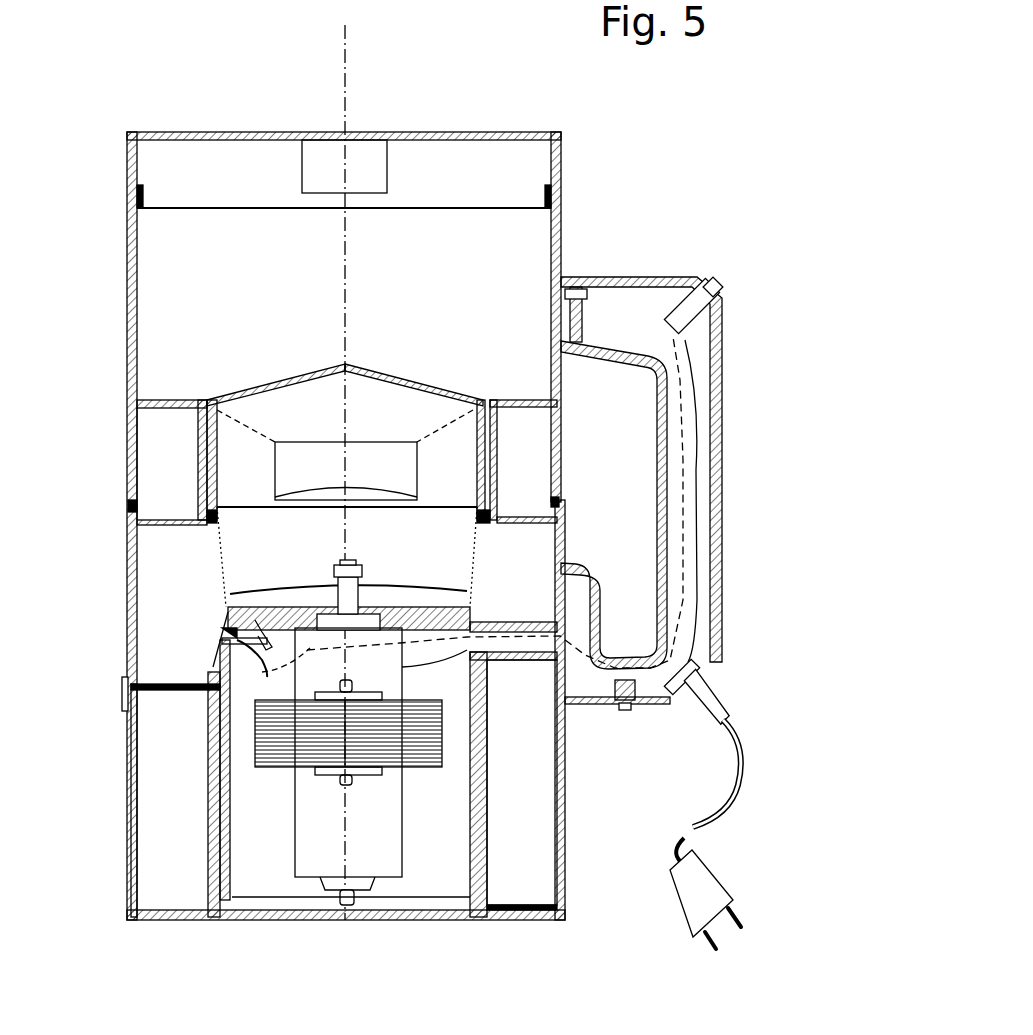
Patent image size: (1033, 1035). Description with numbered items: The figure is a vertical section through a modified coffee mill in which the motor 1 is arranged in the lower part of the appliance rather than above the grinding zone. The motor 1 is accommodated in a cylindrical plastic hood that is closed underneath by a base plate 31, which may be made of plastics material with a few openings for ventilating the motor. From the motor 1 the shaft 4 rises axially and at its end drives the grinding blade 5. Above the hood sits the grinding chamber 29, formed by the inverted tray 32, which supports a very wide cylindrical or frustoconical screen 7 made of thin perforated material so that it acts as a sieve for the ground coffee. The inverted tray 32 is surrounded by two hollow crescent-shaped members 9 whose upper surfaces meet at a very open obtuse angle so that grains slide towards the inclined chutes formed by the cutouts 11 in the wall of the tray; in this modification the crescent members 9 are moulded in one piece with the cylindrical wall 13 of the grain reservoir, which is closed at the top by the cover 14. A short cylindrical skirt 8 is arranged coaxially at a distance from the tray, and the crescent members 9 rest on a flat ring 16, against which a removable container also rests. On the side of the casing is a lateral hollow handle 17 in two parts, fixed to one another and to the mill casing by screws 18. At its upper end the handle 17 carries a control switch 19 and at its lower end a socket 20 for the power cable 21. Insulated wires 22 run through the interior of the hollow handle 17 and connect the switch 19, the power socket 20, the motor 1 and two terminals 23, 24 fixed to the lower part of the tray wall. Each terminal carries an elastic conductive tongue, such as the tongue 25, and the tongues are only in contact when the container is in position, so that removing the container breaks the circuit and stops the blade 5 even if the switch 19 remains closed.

The motor 1 is at (386, 821).
The shaft 4 is at (357, 597).
The grinding blade 5 is at (380, 582).
The grinding bowl 7 is at (221, 587).
The skirt 8 is at (129, 637).
The crescent-shaped members 9 is at (165, 405).
The cutouts 11 is at (322, 465).
The cylinder 13 is at (127, 322).
The cover 14 is at (413, 131).
The flat ring 16 is at (171, 545).
The handle 17 is at (657, 275).
The screws 18 is at (603, 283).
The control switch 19 is at (708, 272).
The socket 20 is at (703, 697).
The power cable 21 is at (720, 810).
The insulated wires 22 is at (697, 407).
The terminal 23 is at (280, 623).
The terminal 24 is at (236, 661).
The elastic conductive tongue 25 is at (243, 623).
The grinding chamber 29 is at (387, 400).
The base plate 31 is at (345, 918).
The inverted tray 32 is at (243, 395).